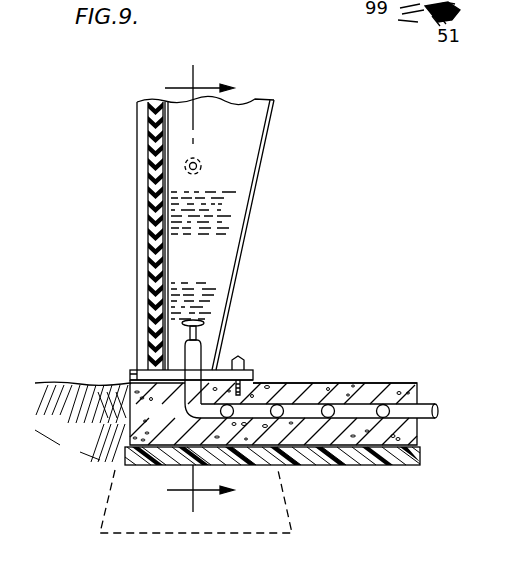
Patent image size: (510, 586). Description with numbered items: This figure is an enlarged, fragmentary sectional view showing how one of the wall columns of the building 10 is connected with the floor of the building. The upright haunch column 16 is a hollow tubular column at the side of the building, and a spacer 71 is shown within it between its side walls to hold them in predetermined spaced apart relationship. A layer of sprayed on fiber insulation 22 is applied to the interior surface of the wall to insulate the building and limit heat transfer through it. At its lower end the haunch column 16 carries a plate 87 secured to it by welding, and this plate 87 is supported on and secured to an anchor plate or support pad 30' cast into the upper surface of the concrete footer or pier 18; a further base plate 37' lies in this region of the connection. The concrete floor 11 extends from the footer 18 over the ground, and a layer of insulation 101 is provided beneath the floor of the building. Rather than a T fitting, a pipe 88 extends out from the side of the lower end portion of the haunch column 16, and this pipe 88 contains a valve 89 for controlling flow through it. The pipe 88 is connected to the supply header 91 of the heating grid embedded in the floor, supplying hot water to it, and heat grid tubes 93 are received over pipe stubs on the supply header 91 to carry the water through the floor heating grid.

The building 10 is at (202, 290).
The concrete floor 11 is at (395, 384).
The haunch column 16 is at (258, 178).
The footer 18 is at (290, 468).
The sprayed on fiber insulation 22 is at (150, 181).
The anchor plate 30' is at (335, 367).
The base plate 37' is at (227, 360).
The spacer 71 is at (199, 163).
The plate 87 is at (234, 372).
The pipe 88 is at (197, 360).
The valve 89 is at (194, 332).
The supply header 91 is at (420, 406).
The heat grid tubes 93 is at (330, 420).
The layer of insulation 101 is at (376, 466).